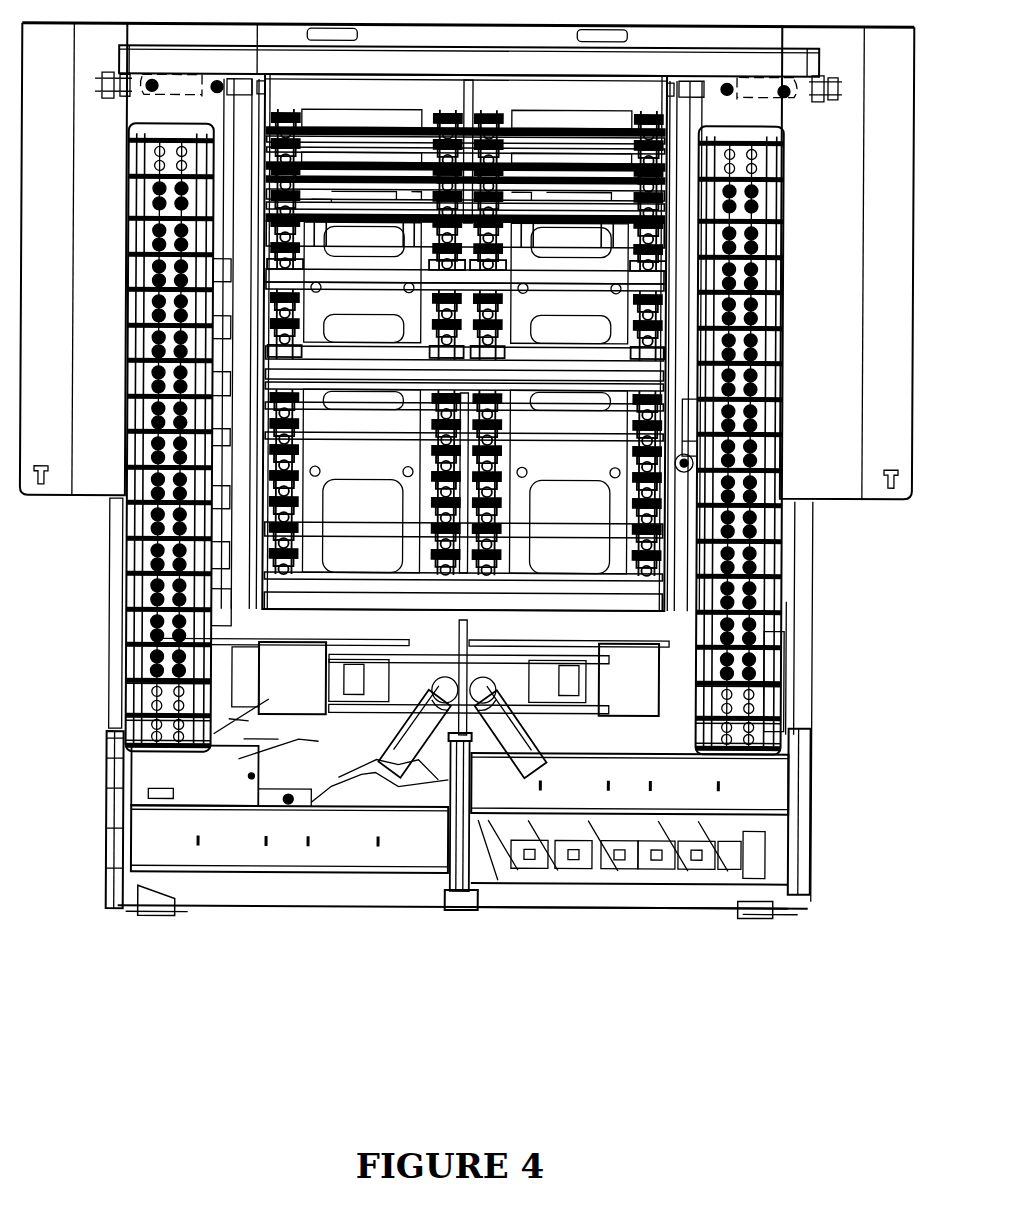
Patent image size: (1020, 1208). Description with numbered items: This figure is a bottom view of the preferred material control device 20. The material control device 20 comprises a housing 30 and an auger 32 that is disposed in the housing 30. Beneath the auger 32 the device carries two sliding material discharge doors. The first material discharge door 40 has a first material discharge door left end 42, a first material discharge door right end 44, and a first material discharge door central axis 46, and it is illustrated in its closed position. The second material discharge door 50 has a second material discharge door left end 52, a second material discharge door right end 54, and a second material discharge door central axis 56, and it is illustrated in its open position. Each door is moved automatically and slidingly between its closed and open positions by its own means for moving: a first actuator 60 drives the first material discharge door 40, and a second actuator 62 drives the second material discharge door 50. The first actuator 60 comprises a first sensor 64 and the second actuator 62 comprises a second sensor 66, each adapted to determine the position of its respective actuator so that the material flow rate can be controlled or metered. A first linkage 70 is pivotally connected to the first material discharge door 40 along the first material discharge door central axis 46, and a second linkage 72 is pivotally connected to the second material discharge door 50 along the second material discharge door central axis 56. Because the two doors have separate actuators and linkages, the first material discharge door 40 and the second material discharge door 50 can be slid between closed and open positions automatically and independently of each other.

The material control device 20 is at (848, 831).
The housing 30 is at (296, 905).
The auger 32 is at (590, 902).
The first material discharge door 40 is at (215, 905).
The first material discharge door left end 42 is at (148, 915).
The first material discharge door right end 44 is at (430, 905).
The first material discharge door central axis 46 is at (268, 905).
The second material discharge door 50 is at (713, 902).
The second material discharge door left end 52 is at (492, 902).
The second material discharge door right end 54 is at (773, 902).
The second material discharge door central axis 56 is at (647, 902).
The first actuator 60 is at (398, 905).
The second actuator 62 is at (519, 902).
The first sensor 64 is at (383, 905).
The second sensor 66 is at (533, 902).
The first linkage 70 is at (345, 905).
The second linkage 72 is at (570, 902).